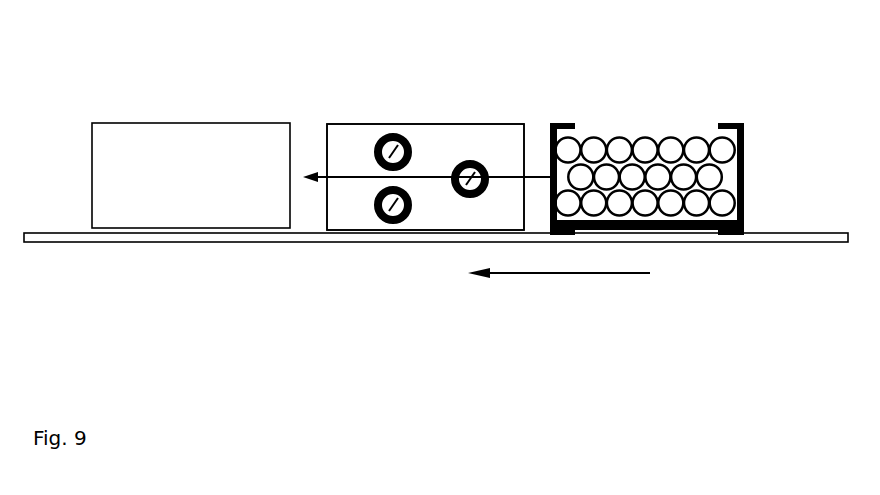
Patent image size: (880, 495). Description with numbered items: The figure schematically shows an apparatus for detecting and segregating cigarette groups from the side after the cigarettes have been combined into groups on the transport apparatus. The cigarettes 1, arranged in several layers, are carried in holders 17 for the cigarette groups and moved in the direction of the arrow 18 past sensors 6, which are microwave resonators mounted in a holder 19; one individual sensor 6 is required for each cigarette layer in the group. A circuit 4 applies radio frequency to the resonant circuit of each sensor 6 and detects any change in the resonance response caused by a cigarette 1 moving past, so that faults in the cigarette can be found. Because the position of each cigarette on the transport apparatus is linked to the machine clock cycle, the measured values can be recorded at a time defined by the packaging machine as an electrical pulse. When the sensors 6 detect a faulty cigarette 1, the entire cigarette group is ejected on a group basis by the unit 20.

The cigarette 1 is at (615, 162).
The circuit 4 is at (354, 143).
The microwave resonators 6 is at (399, 187).
The holders 17 is at (745, 152).
The arrow 18 is at (525, 275).
The holder 19 is at (502, 140).
The unit 20 is at (191, 175).